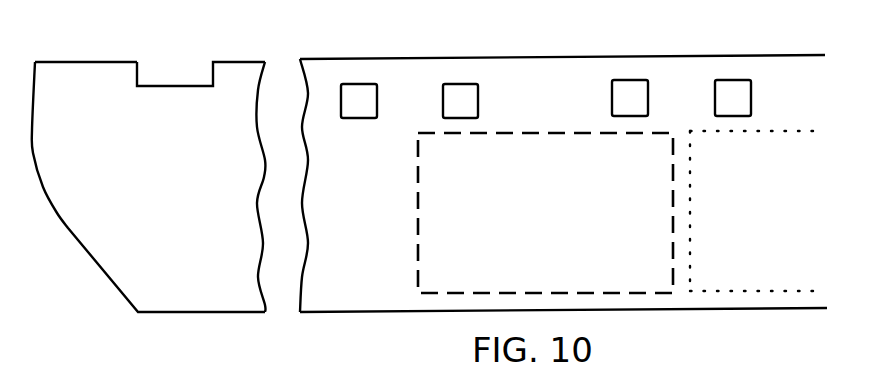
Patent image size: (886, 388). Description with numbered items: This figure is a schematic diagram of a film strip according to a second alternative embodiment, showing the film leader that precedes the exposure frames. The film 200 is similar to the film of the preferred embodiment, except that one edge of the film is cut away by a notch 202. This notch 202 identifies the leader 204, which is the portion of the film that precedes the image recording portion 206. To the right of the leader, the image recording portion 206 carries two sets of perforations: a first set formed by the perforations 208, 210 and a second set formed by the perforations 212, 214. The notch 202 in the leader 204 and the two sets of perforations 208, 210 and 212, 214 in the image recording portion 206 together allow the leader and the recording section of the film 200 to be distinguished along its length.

The film 200 is at (149, 207).
The notch 202 is at (170, 85).
The leader 204 is at (80, 78).
The image recording portion 206 is at (337, 298).
The perforation 208 is at (359, 84).
The perforation 210 is at (461, 84).
The perforation 212 is at (630, 80).
The perforation 214 is at (732, 80).